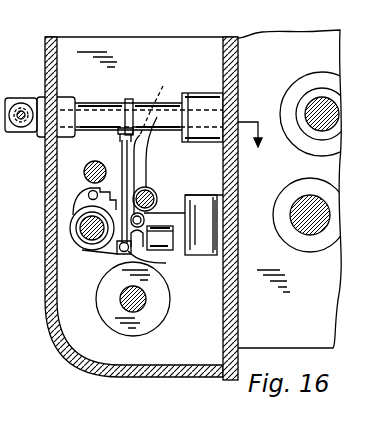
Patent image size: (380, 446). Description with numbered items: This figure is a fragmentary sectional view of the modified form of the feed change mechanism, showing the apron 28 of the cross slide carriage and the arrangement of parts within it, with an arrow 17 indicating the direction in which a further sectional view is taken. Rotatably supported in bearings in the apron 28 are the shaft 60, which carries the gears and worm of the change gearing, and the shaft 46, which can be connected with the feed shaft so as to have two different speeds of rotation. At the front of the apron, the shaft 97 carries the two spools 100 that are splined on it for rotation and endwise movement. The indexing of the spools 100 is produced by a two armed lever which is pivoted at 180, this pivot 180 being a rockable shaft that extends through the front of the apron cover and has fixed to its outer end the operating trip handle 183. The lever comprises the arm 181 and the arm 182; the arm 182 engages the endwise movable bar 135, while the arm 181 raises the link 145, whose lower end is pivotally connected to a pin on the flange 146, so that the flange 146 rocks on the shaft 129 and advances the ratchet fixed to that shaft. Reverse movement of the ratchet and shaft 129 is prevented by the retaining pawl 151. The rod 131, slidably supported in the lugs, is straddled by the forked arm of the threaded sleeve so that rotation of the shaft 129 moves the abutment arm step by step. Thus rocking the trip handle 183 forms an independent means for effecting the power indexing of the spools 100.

The apron 28 is at (255, 45).
The shaft 60 is at (341, 108).
The section view direction arrow 17 is at (256, 140).
The shaft 46 is at (328, 208).
The operating trip handle 183 is at (14, 98).
The pivot 180 is at (92, 104).
The arm 181 is at (154, 143).
The rod 131 is at (87, 165).
The link 145 is at (120, 172).
The arm 182 is at (148, 166).
The bar 135 is at (157, 199).
The flange 146 is at (78, 208).
The shaft 129 is at (92, 237).
The retaining pawl 151 is at (158, 251).
The shaft 97 is at (146, 299).
The spools 100 is at (150, 322).